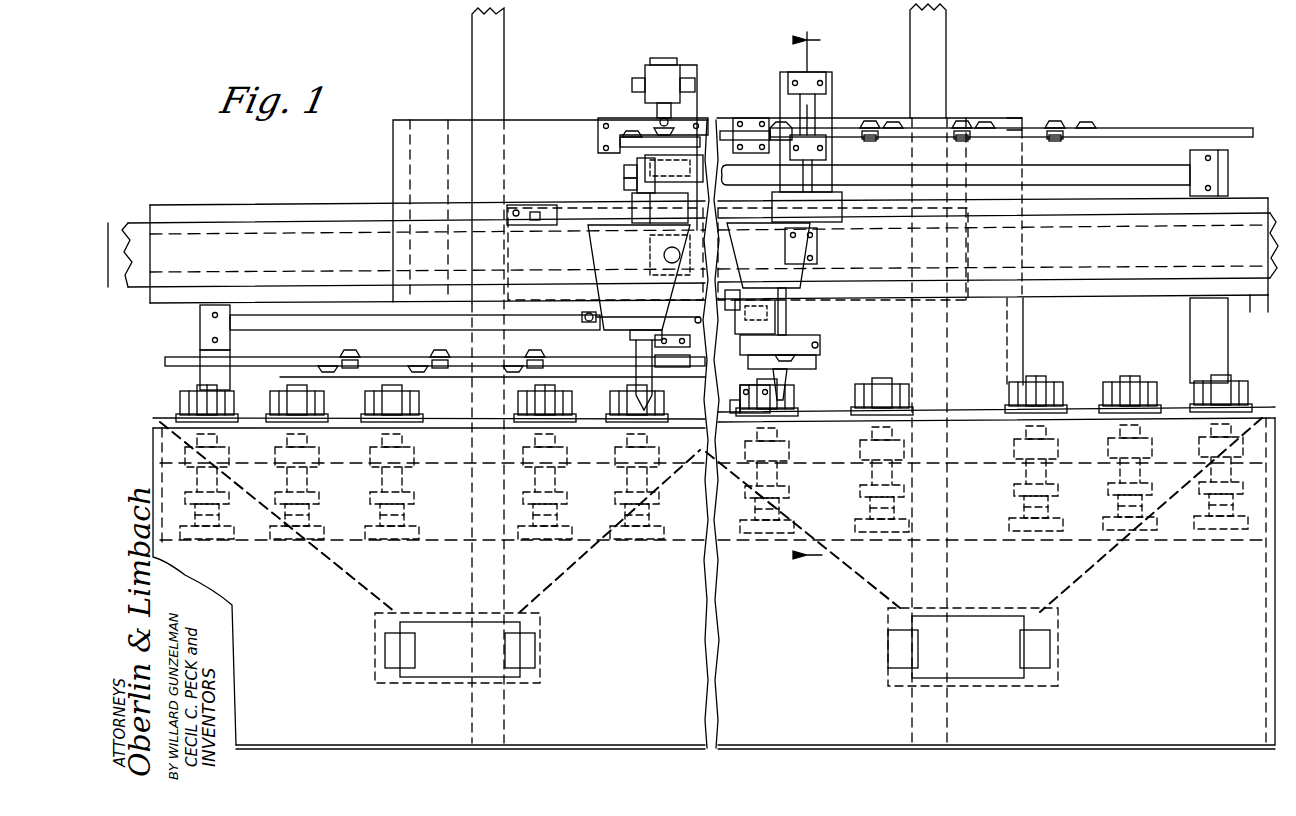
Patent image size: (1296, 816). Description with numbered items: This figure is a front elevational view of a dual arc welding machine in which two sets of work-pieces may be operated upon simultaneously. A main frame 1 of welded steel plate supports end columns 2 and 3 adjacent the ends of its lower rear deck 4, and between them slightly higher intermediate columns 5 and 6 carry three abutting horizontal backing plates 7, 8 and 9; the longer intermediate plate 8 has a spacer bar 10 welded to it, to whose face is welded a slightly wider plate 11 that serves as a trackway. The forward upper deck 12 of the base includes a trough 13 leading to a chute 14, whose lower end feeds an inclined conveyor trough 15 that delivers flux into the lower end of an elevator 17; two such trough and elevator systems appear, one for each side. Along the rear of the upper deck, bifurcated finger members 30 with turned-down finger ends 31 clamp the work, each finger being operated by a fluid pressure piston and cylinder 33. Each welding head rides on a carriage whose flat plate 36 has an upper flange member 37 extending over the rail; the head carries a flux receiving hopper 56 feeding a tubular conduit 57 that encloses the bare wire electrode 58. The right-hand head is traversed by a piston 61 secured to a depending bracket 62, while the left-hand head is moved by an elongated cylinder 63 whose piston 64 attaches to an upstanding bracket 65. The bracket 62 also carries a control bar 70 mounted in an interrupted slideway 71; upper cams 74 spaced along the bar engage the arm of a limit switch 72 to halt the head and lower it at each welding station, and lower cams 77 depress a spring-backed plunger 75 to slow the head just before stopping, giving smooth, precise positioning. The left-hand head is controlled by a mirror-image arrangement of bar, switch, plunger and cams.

The main frame 1 is at (1152, 712).
The end column 2 is at (1228, 338).
The end column 3 is at (200, 349).
The lower rear deck 4 is at (807, 307).
The intermediate column 5 is at (1023, 322).
The intermediate column 6 is at (393, 156).
The backing plate 7 is at (946, 122).
The backing plate 8 is at (1151, 282).
The backing plate 9 is at (1023, 348).
The spacer bar 10 is at (1232, 226).
The plate 11 is at (1256, 304).
The forward upper deck 12 is at (1262, 407).
The trough 13 is at (153, 458).
The chute 14 is at (571, 566).
The inclined conveyor trough 15 is at (540, 620).
The elevator 17 is at (492, 50).
The bifurcated finger member 30 is at (185, 388).
The finger end 31 is at (228, 398).
The cylinder 33 is at (1050, 478).
The flat plate 36 is at (508, 250).
The upper flange member 37 is at (566, 212).
The flux receiving hopper 56 is at (595, 250).
The tubular conduit 57 is at (636, 345).
The bare wire electrode 58 is at (660, 415).
The piston 61 is at (757, 305).
The depending bracket 62 is at (786, 305).
The elongated cylinder 63 is at (1123, 168).
The piston 64 is at (624, 172).
The upstanding bracket 65 is at (624, 187).
The control bar 70 is at (165, 362).
The interrupted slideway 71 is at (820, 350).
The limit switch 72 is at (690, 162).
The upper cam 74 is at (350, 356).
The spring-backed plunger 75 is at (760, 370).
The lower cam 77 is at (338, 372).